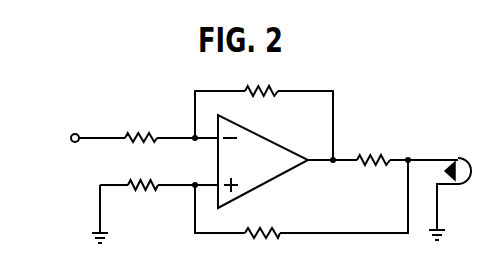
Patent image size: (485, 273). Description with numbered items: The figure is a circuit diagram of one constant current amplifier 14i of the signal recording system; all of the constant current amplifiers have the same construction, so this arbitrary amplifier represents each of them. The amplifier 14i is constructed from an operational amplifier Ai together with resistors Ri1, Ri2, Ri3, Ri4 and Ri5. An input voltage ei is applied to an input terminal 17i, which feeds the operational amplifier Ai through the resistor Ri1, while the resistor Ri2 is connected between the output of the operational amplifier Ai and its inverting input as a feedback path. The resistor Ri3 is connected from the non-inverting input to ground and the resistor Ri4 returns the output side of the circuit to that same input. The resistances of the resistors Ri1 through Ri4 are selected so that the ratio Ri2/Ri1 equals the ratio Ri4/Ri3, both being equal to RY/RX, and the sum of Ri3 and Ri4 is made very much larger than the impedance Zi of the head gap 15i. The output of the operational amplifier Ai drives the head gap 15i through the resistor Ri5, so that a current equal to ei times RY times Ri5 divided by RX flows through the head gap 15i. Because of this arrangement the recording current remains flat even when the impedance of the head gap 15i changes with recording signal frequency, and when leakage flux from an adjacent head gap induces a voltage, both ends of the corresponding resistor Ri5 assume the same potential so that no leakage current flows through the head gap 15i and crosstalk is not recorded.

The constant current amplifier 14i is at (378, 90).
The head gap 15i is at (460, 157).
The input terminal 17i is at (75, 133).
The operational amplifier Ai is at (275, 139).
The resistor Ri1 is at (142, 128).
The resistor Ri2 is at (261, 80).
The resistor Ri3 is at (146, 199).
The resistor Ri4 is at (262, 246).
The resistor Ri5 is at (374, 149).